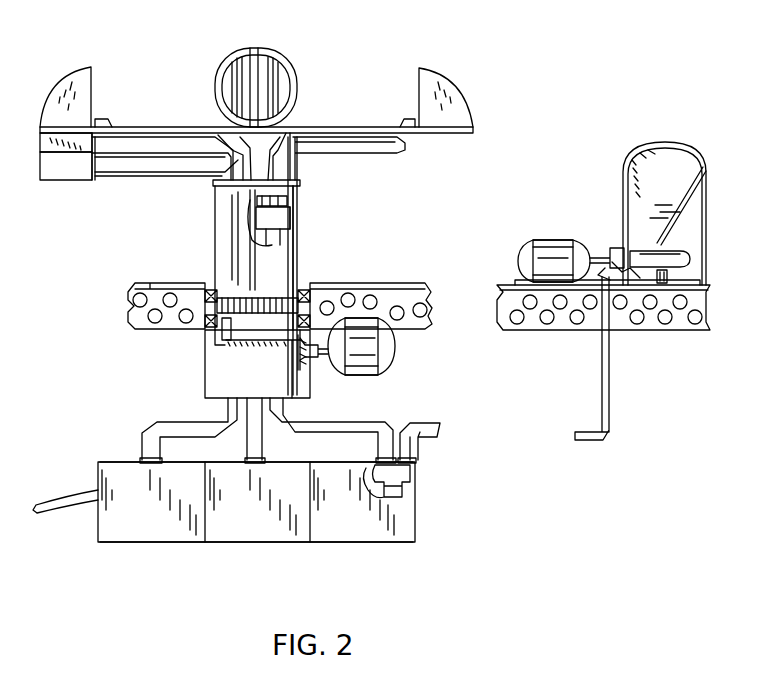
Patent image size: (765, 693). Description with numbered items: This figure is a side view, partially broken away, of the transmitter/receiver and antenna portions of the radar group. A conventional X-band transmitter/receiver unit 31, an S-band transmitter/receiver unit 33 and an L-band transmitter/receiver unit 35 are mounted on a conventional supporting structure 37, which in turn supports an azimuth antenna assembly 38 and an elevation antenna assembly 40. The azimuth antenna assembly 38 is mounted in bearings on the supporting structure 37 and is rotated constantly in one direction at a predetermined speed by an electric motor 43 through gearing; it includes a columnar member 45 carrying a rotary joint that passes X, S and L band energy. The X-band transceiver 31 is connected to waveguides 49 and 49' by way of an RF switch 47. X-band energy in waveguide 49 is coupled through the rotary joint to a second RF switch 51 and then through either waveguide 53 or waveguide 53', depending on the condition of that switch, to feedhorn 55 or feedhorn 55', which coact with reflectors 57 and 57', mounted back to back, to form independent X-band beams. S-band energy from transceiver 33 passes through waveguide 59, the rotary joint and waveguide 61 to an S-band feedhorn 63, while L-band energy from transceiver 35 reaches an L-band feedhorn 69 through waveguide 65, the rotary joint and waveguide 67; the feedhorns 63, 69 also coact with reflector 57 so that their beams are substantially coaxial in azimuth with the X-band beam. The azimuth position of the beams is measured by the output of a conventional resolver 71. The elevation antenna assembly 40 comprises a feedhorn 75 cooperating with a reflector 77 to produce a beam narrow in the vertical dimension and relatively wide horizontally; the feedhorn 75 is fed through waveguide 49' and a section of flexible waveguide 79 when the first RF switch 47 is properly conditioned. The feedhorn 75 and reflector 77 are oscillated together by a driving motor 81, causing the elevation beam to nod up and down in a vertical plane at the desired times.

The X-band transmitter/receiver unit 31 is at (410, 523).
The S-band transmitter/receiver unit 33 is at (290, 541).
The L-band transmitter/receiver unit 35 is at (130, 464).
The supporting structure 37 is at (154, 285).
The azimuth antenna assembly 38 is at (184, 86).
The elevation antenna assembly 40 is at (695, 135).
The electric motor 43 is at (386, 363).
The columnar member 45 is at (297, 270).
The RF switch 47 is at (406, 478).
The waveguide 49 is at (333, 424).
The waveguide 49' is at (424, 432).
The second RF switch 51 is at (284, 219).
The waveguide 53 is at (290, 200).
The waveguide 53' is at (311, 156).
The feedhorn 55 is at (69, 94).
The feedhorn 55' is at (439, 93).
The reflector 57 is at (251, 75).
The reflector 57' is at (280, 75).
The waveguide 59 is at (258, 455).
The waveguide 61 is at (170, 145).
The S-band feedhorn 63 is at (42, 148).
The waveguide 65 is at (192, 425).
The waveguide 67 is at (158, 173).
The L-band feedhorn 69 is at (46, 172).
The resolver 71 is at (212, 336).
The feedhorn 75 is at (691, 254).
The reflector 77 is at (637, 210).
The flexible waveguide 79 is at (606, 248).
The driving motor 81 is at (548, 241).